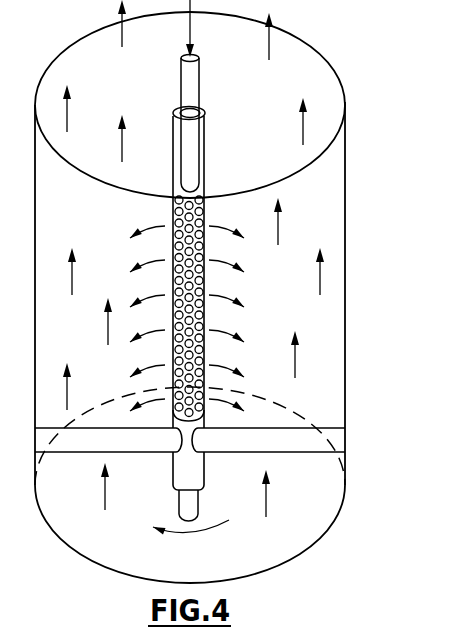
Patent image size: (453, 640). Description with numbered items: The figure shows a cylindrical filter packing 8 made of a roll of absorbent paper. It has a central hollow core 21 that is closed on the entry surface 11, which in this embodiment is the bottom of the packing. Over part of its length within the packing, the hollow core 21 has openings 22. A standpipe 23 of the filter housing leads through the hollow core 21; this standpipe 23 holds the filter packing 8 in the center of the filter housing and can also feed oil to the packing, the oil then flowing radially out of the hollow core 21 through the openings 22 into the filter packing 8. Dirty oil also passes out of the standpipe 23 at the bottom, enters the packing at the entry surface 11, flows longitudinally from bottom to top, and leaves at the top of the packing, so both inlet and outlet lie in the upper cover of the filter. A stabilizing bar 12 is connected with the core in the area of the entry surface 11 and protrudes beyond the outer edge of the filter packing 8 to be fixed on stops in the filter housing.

The cylindrical filter packing 8 is at (298, 68).
The entry surface 11 is at (294, 542).
The stabilizing bar 12 is at (331, 442).
The central hollow core 21 is at (208, 353).
The openings 22 is at (207, 223).
The standpipe 23 is at (192, 76).